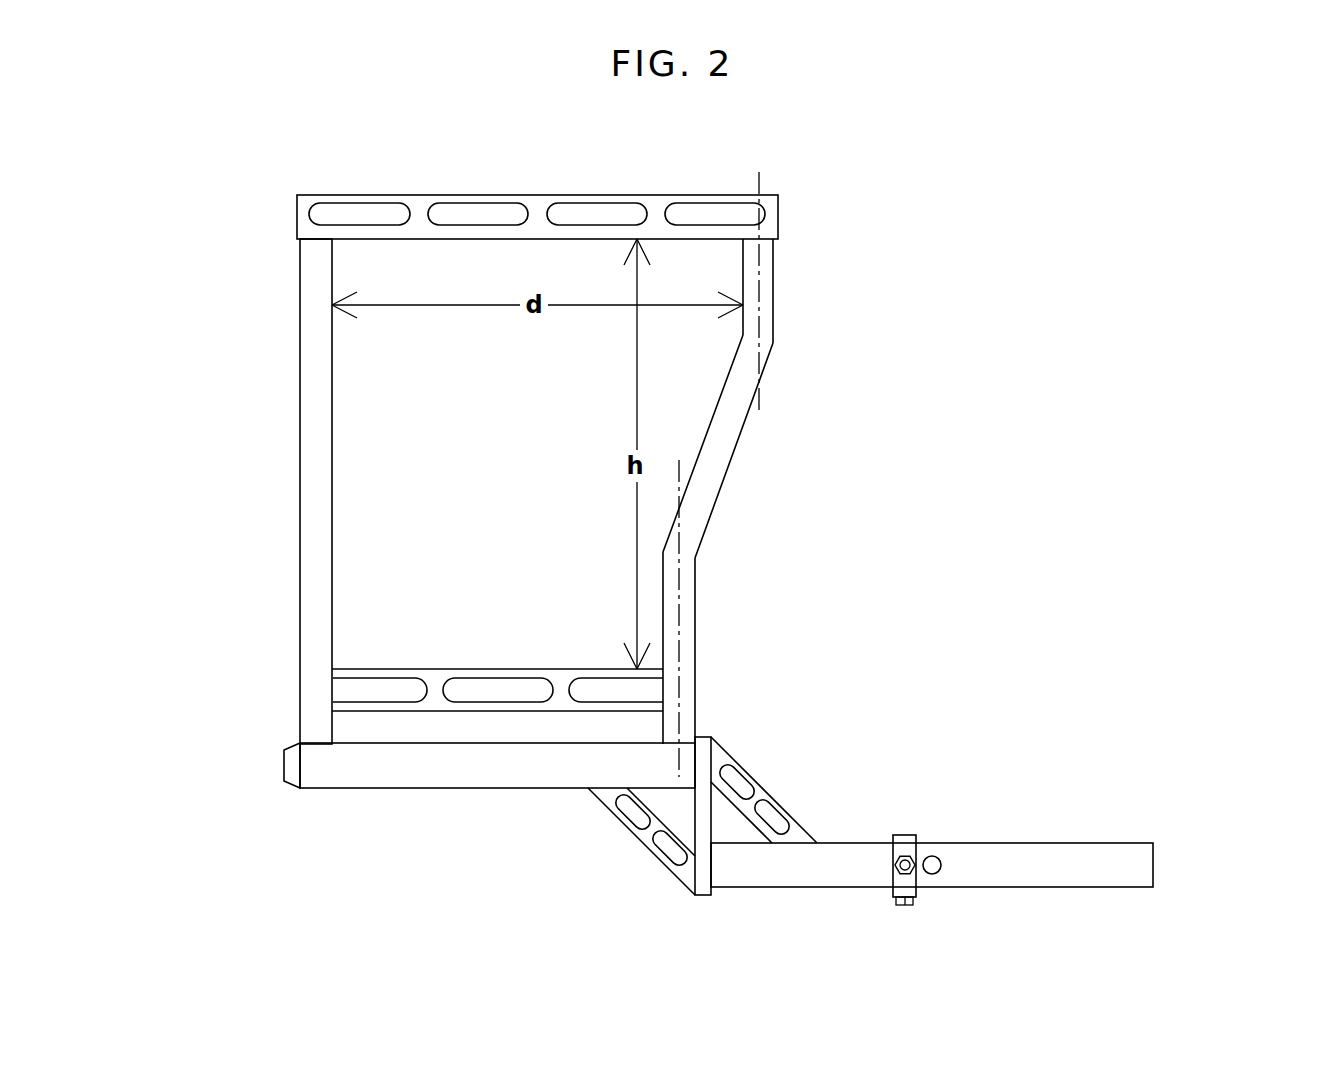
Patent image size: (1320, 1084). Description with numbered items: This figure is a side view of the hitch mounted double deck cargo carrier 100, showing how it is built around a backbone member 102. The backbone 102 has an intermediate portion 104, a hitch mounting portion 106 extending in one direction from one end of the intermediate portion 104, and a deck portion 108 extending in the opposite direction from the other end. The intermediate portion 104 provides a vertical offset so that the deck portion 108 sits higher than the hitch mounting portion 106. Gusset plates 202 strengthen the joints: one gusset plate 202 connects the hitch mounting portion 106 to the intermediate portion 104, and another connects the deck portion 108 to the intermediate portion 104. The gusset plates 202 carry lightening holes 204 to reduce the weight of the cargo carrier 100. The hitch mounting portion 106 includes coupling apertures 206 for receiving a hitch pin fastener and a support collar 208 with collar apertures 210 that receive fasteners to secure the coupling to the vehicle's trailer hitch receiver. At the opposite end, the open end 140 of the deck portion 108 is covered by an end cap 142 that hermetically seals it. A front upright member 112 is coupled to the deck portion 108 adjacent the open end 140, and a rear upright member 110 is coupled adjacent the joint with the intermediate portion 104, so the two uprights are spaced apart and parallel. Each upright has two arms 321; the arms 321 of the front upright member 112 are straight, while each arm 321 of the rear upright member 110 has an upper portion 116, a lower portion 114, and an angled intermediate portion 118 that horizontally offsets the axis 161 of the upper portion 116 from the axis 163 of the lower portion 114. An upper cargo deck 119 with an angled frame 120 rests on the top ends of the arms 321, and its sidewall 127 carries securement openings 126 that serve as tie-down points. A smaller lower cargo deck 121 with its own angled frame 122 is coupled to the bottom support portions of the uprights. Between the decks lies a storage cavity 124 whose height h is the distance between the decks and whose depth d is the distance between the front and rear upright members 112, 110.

The cargo carrier 100 is at (1093, 112).
The backbone member 102 is at (1033, 768).
The intermediate portion 104 is at (705, 897).
The hitch mounting portion 106 is at (1067, 873).
The deck portion 108 is at (374, 776).
The rear upright member 110 is at (736, 610).
The front upright member 112 is at (290, 558).
The lower portion 114 is at (690, 577).
The upper portion 116 is at (767, 279).
The angled intermediate portion 118 is at (737, 428).
The upper cargo deck 119 is at (688, 170).
The angled frame 120 is at (776, 209).
The lower cargo deck 121 is at (514, 652).
The angled frame 122 is at (435, 670).
The storage cavity 124 is at (456, 446).
The securement openings 126 is at (380, 213).
The sidewall 127 is at (878, 222).
The open end 140 is at (290, 772).
The end cap 142 is at (223, 892).
The axis 161 is at (762, 398).
The axis 163 is at (688, 532).
The gusset plates 202 is at (716, 752).
The lightening holes 204 is at (752, 767).
The coupling apertures 206 is at (933, 875).
The support collar 208 is at (908, 838).
The collar apertures 210 is at (895, 867).
The arms 321 is at (218, 422).